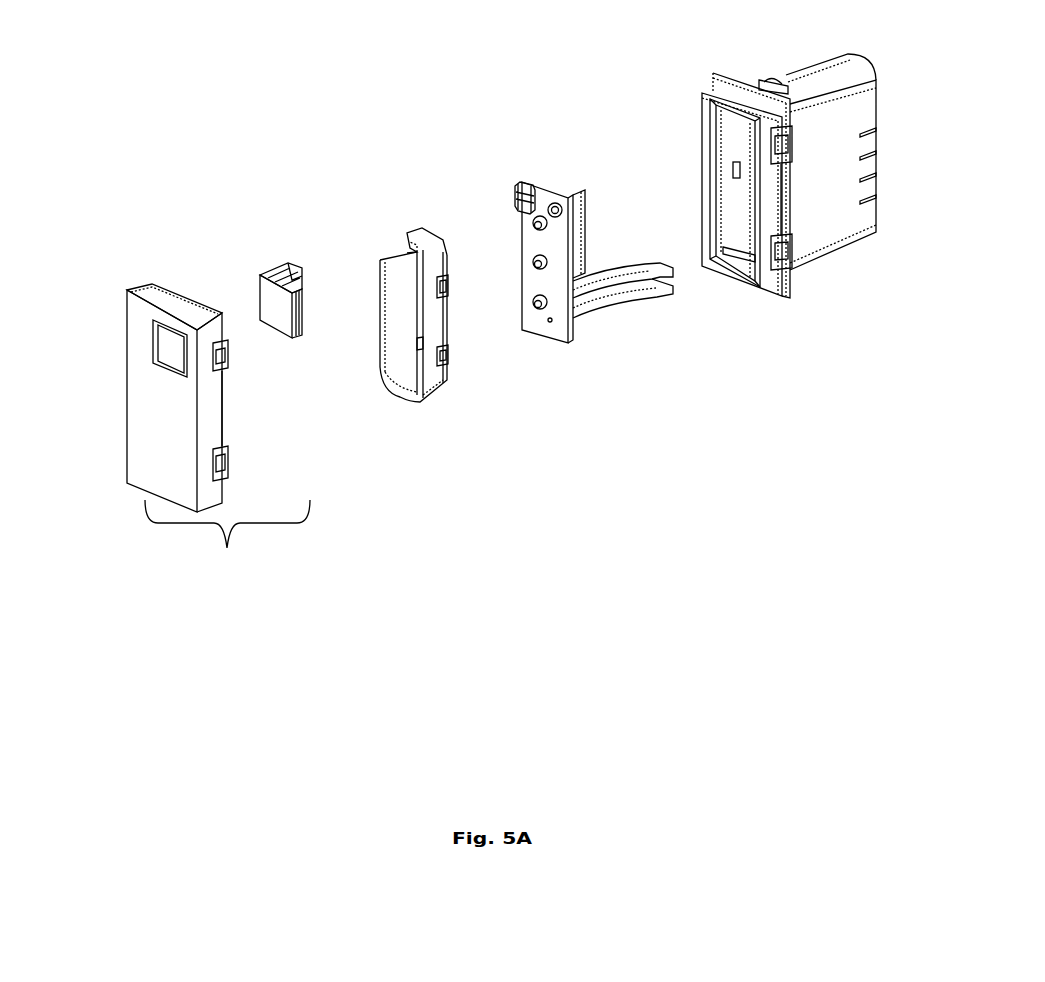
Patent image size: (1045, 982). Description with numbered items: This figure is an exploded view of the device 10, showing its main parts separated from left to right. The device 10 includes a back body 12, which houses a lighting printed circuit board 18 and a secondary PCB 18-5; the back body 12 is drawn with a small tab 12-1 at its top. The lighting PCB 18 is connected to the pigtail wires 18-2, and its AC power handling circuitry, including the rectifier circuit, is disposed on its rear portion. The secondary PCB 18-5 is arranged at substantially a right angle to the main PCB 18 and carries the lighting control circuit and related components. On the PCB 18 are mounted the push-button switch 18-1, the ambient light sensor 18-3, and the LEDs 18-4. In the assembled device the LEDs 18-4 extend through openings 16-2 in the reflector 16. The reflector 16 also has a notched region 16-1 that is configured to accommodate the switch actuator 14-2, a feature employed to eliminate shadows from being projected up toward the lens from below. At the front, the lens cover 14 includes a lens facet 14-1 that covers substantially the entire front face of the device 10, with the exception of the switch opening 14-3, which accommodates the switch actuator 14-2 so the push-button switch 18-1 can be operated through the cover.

The device 10 is at (502, 577).
The back body 12 is at (849, 306).
The housing tab 12-1 is at (772, 78).
The lens cover 14 is at (226, 577).
The lens facet 14-1 is at (140, 368).
The switch actuator 14-2 is at (272, 293).
The switch opening 14-3 is at (183, 348).
The reflector 16 is at (416, 190).
The notched region 16-1 is at (407, 253).
The openings 16-2 is at (420, 343).
The lighting printed circuit board 18 is at (637, 432).
The push-button switch 18-1 is at (525, 180).
The pigtail wires 18-2 is at (605, 293).
The ambient light sensor 18-3 is at (554, 203).
The LEDs 18-4 is at (538, 312).
The secondary PCB 18-5 is at (584, 210).